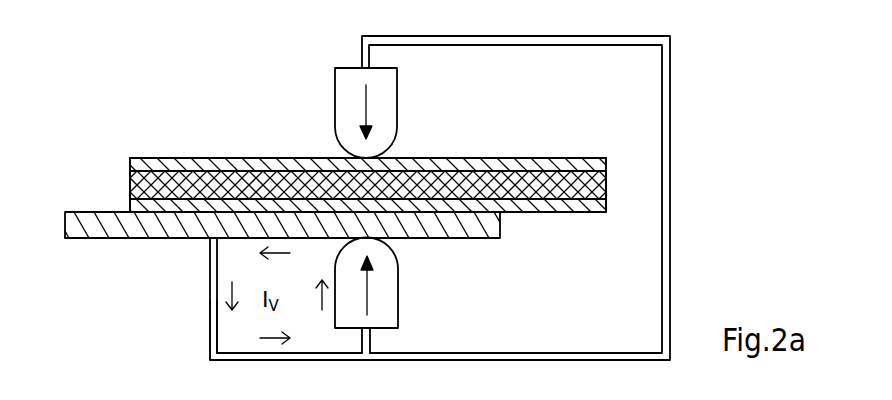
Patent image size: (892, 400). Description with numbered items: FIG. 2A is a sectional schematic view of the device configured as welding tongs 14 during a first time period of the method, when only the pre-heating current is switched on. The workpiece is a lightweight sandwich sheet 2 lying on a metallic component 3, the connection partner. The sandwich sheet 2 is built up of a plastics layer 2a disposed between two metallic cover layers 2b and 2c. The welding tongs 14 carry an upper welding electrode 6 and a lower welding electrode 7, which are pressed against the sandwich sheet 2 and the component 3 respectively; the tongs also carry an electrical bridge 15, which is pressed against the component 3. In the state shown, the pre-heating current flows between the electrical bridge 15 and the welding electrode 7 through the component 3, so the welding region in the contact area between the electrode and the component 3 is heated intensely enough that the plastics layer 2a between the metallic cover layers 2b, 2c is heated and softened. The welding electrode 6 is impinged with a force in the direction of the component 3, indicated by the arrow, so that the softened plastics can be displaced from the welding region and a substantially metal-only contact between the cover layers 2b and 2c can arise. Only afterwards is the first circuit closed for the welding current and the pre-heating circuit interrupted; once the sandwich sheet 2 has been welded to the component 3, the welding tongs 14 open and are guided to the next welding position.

The sandwich sheet 2 is at (153, 158).
The plastics layer 2a is at (192, 182).
The metallic cover layer 2b is at (230, 165).
The metallic cover layer 2c is at (130, 205).
The component 3 is at (83, 240).
The welding electrode 6 is at (397, 92).
The welding electrode 7 is at (398, 305).
The welding tongs 14 is at (672, 102).
The electrical bridge 15 is at (208, 247).